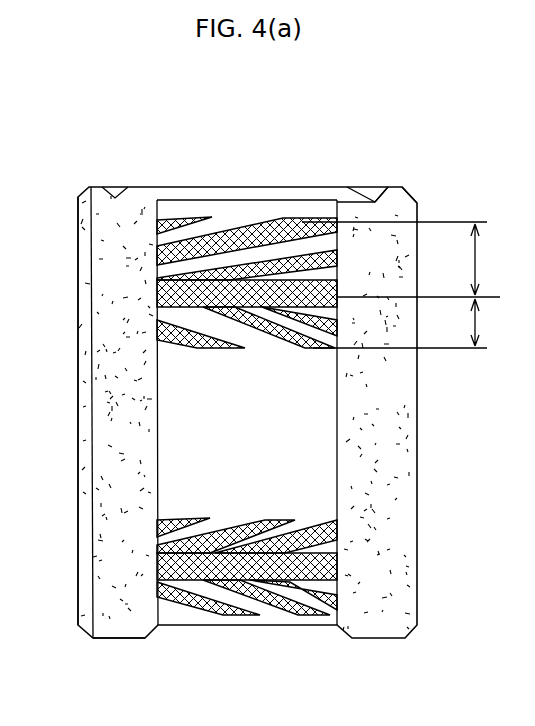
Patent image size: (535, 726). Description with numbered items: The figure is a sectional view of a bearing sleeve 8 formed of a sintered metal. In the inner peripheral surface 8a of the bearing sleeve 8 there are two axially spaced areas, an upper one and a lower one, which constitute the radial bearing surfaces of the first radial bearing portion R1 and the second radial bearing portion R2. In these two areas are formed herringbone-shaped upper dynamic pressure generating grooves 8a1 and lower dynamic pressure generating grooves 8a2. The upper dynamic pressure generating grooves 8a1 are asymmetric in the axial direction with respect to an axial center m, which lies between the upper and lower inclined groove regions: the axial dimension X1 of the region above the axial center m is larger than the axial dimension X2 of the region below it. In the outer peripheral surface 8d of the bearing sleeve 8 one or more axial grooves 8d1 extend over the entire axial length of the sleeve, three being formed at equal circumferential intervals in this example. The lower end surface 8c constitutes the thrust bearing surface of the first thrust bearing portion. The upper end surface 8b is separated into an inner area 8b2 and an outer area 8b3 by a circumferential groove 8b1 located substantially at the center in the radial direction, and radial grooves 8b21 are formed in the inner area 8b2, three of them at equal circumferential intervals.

The bearing sleeve 8 is at (65, 187).
The inner peripheral surface 8a is at (338, 416).
The upper dynamic pressure generating grooves 8a1 is at (202, 229).
The lower dynamic pressure generating grooves 8a2 is at (210, 530).
The upper end surface 8b is at (135, 176).
The circumferential groove 8b1 is at (374, 187).
The inner area 8b2 is at (352, 187).
The radial grooves 8b21 is at (346, 187).
The outer area 8b3 is at (396, 187).
The lower end surface 8c is at (126, 651).
The outer peripheral surface 8d is at (77, 364).
The axial grooves 8d1 is at (91, 413).
The first radial bearing portion R1 is at (155, 288).
The second radial bearing portion R2 is at (150, 577).
The axial dimension of the region above the axial center X1 is at (405, 258).
The axial dimension of the region below the axial center X2 is at (410, 323).
The axial center m is at (430, 297).